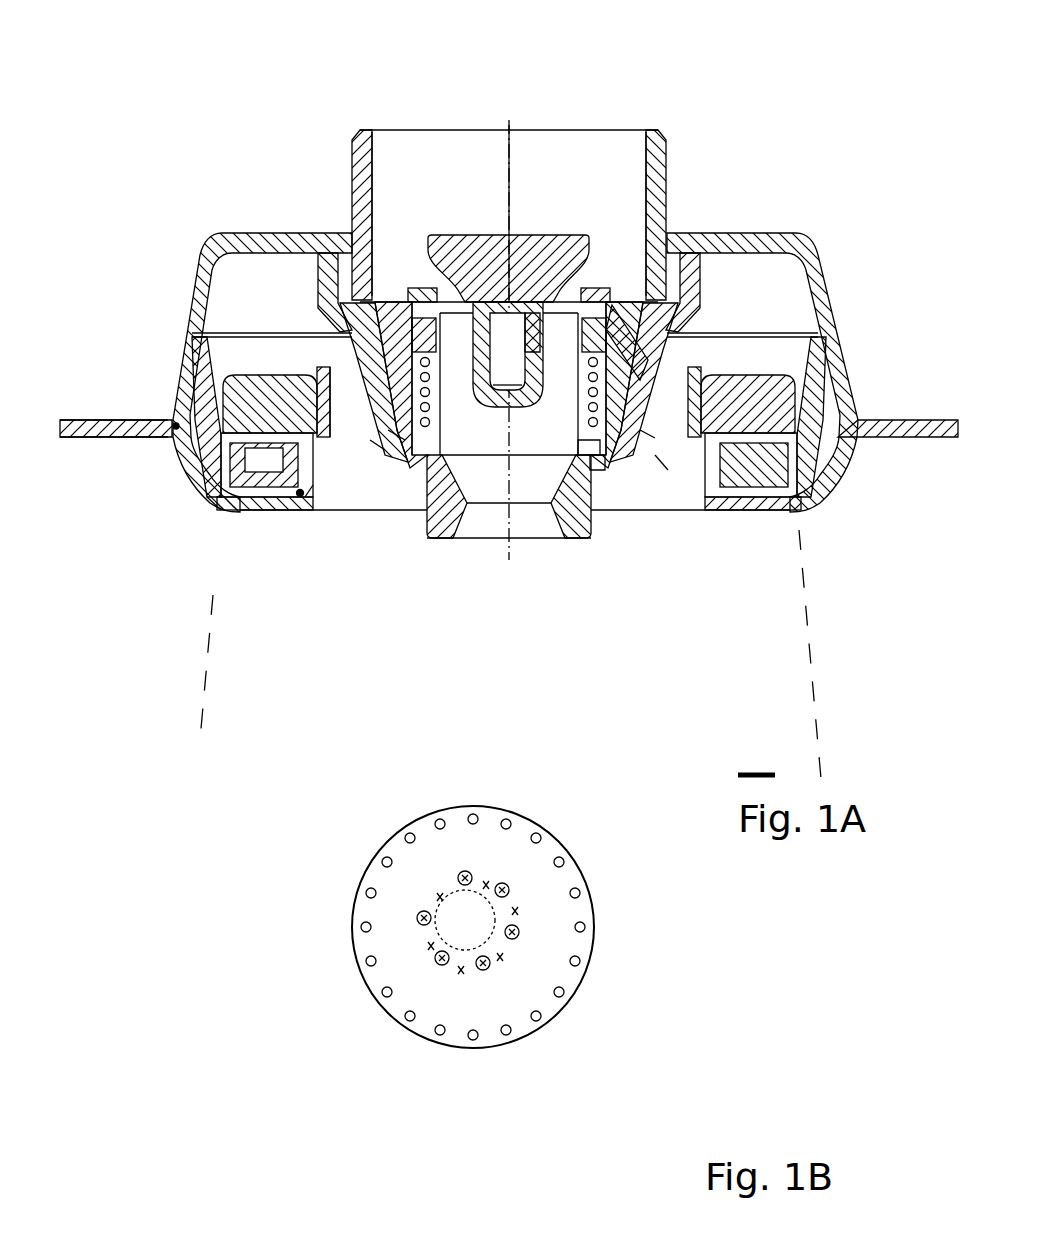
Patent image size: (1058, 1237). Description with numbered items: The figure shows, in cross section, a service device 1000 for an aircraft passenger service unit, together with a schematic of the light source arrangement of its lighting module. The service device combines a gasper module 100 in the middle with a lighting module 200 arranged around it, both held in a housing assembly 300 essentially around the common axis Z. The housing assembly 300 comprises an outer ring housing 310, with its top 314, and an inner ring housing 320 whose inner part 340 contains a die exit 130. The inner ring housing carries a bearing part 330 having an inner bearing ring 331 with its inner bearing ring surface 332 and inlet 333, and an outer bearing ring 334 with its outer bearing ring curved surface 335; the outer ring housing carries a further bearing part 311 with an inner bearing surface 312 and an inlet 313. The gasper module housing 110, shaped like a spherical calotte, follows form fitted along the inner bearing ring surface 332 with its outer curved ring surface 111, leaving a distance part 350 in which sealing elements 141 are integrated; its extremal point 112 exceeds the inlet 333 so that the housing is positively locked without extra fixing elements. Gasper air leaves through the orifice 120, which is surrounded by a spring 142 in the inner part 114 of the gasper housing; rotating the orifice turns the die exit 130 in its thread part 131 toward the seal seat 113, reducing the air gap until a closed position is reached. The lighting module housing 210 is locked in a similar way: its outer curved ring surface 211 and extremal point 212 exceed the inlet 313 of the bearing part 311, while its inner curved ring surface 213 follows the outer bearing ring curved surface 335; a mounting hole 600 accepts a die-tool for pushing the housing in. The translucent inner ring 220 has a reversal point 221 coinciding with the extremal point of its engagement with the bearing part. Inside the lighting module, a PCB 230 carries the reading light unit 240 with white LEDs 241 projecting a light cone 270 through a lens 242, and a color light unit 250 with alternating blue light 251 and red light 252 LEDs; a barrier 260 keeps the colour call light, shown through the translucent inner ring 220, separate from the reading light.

In FIG. 1A, the service device 1000 is at (775, 100).
In FIG. 1A, the gasper module 100 is at (531, 533).
In FIG. 1A, the gasper module housing 110 is at (393, 283).
In FIG. 1A, the outer curved ring surface of the gasper module housing 111 is at (604, 452).
In FIG. 1A, the extremal point of an outer curved ring surface of the gasper module housing 112 is at (658, 360).
In FIG. 1A, the seal seat 113 is at (590, 286).
In FIG. 1A, the inner part of the gasper module housing 114 is at (615, 440).
In FIG. 1A, the orifice 120 is at (592, 520).
In FIG. 1A, the die exit 130 is at (540, 246).
In FIG. 1A, the thread part 131 is at (520, 355).
In FIG. 1A, the sealing elements 141 is at (662, 333).
In FIG. 1A, the spring 142 is at (418, 432).
In FIG. 1A, the lighting module 200 is at (493, 460).
In FIG. 1A, the lighting module housing 210 is at (206, 441).
In FIG. 1A, the outer curved ring surface of lighting module housing 211 is at (216, 490).
In FIG. 1A, the extremal point of an outer curved ring surface of the lighting module housing 212 is at (150, 436).
In FIG. 1A, the inner curved ring surface of the lighting module housing 213 is at (333, 376).
In FIG. 1A, the translucent inner ring 220 is at (322, 370).
In FIG. 1A, the reversal point 221 is at (306, 511).
In FIG. 1A, the PCB 230 is at (222, 436).
In FIG. 1B, the PCB 230 is at (515, 1010).
In FIG. 1A, the reading light unit 240 is at (214, 498).
In FIG. 1A, the LED 241 is at (243, 420).
In FIG. 1B, the LED 241 is at (498, 815).
In FIG. 1A, the lens 242 is at (238, 512).
In FIG. 1A, the color light unit 250 is at (301, 496).
In FIG. 1B, the blue light 251 is at (508, 889).
In FIG. 1B, the red light 252 is at (515, 908).
In FIG. 1A, the barrier 260 is at (730, 480).
In FIG. 1A, the light cone 270 is at (201, 738).
In FIG. 1A, the housing assembly 300 is at (509, 348).
In FIG. 1A, the outer ring housing 310 is at (828, 302).
In FIG. 1A, the bearing part of outer ring housing 311 is at (168, 420).
In FIG. 1A, the inner bearing surface of outer ring housing 312 is at (174, 422).
In FIG. 1A, the inlet of an outer bearing ring surface of a bearing part 313 is at (171, 438).
In FIG. 1A, the top of the outer ring housing 314 is at (755, 253).
In FIG. 1A, the inner ring housing 320 is at (671, 192).
In FIG. 1A, the bearing part 330 is at (365, 438).
In FIG. 1A, the inner bearing ring 331 is at (332, 255).
In FIG. 1A, the inner bearing ring surface of the bearing part 332 is at (372, 446).
In FIG. 1A, the inlet of an inner bearing ring surface of the bearing part 333 is at (392, 436).
In FIG. 1A, the outer bearing ring 334 is at (660, 432).
In FIG. 1A, the outer bearing ring curved surface of the bearing part 335 is at (672, 448).
In FIG. 1A, the inner part 340 is at (434, 162).
In FIG. 1A, the distance part 350 is at (665, 375).
In FIG. 1A, the mounting hole 600 is at (592, 352).
In FIG. 1A, the axis Z is at (512, 166).